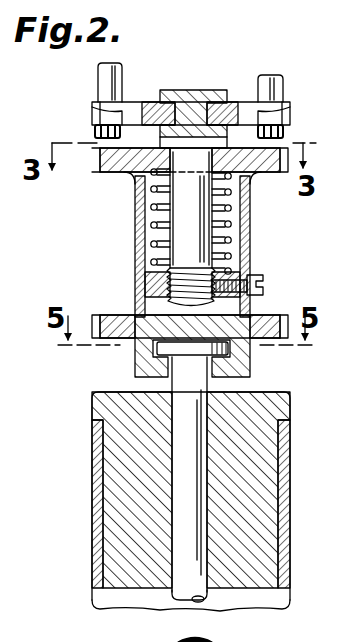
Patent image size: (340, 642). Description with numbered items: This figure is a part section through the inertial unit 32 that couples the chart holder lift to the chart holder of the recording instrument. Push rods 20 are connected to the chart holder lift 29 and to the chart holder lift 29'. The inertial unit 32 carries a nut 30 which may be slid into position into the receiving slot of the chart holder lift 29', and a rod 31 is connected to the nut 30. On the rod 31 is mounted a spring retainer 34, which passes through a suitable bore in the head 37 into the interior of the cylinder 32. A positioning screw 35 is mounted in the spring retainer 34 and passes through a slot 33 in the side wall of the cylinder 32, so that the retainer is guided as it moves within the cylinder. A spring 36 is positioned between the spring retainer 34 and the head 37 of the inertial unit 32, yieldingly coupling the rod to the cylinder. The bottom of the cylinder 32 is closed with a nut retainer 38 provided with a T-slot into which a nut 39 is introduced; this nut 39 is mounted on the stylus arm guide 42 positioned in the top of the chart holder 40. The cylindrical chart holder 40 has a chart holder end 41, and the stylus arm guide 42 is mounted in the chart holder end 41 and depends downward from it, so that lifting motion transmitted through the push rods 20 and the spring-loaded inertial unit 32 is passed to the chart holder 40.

The push rods 20 is at (97, 90).
The chart holder lift 29 is at (209, 131).
The chart holder lift 29' is at (191, 95).
The nut 30 is at (205, 90).
The rod 31 is at (180, 185).
The inertial unit (cylinder) 32 is at (143, 233).
The slot 33 is at (247, 202).
The spring retainer 34 is at (145, 283).
The positioning screw 35 is at (253, 275).
The spring 36 is at (228, 204).
The head 37 is at (107, 173).
The nut retainer 38 is at (233, 363).
The nut 39 is at (150, 349).
The chart holder 40 is at (108, 410).
The chart holder end 41 is at (108, 484).
The stylus arm guide 42 is at (178, 597).